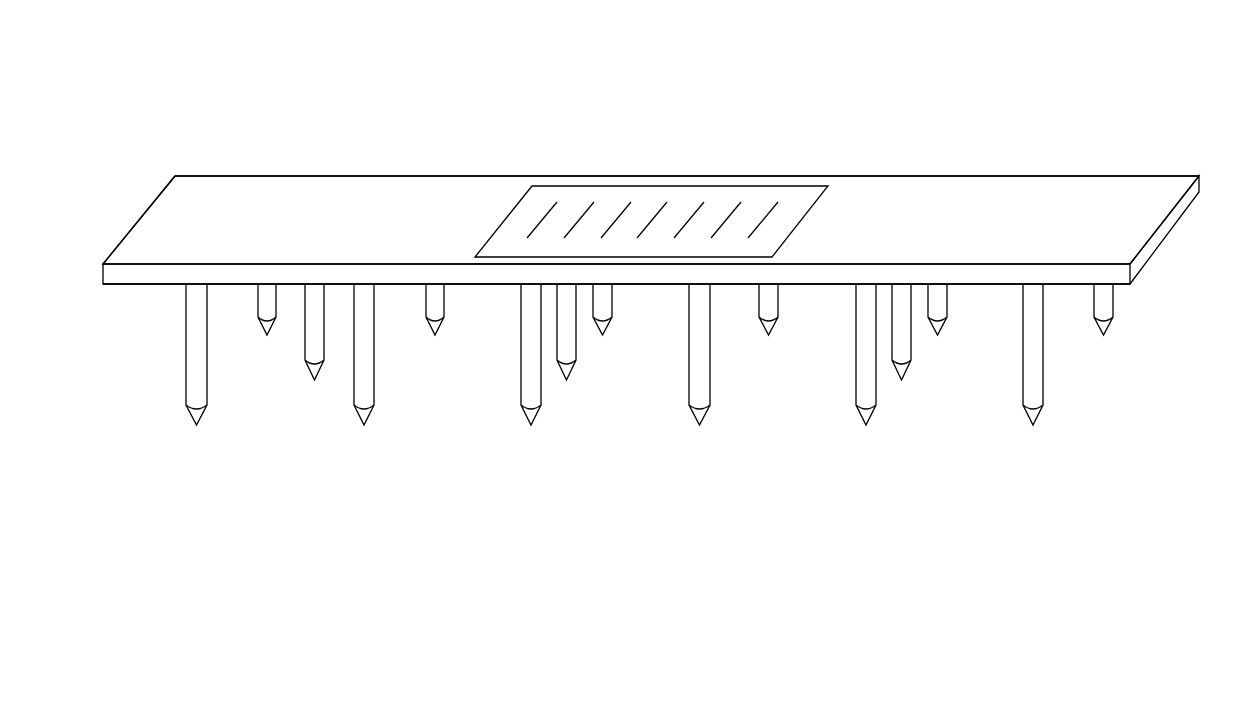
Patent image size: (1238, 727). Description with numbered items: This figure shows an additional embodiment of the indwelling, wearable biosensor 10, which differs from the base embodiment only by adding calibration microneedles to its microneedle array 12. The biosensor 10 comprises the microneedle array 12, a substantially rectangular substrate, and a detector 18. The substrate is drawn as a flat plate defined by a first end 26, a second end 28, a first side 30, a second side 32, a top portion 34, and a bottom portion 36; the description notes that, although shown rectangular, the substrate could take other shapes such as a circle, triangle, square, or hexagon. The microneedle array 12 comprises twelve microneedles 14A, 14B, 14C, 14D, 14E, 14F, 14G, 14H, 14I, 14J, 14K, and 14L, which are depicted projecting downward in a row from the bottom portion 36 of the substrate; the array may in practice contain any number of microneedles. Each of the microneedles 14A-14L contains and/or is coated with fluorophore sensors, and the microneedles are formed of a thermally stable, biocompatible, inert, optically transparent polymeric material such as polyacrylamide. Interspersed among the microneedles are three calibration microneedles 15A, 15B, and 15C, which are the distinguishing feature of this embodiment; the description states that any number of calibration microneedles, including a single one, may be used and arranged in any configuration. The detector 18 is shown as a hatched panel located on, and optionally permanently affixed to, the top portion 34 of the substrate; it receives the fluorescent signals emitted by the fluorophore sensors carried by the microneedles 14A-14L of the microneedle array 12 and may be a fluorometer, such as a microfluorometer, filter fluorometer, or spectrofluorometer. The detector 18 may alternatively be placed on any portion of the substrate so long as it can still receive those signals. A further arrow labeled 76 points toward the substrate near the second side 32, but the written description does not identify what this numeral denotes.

The indwelling, wearable biosensor 10 is at (203, 47).
The microneedle array 12 is at (653, 479).
The microneedle 14A is at (196, 425).
The microneedle 14B is at (267, 335).
The microneedle 14C is at (364, 425).
The microneedle 14D is at (435, 335).
The microneedle 14E is at (531, 425).
The microneedle 14F is at (602, 335).
The microneedle 14G is at (699, 425).
The microneedle 14H is at (768, 335).
The microneedle 14I is at (866, 425).
The microneedle 14J is at (937, 335).
The microneedle 14K is at (1033, 425).
The microneedle 14L is at (1103, 335).
The calibration microneedle 15A is at (314, 380).
The calibration microneedle 15B is at (566, 380).
The calibration microneedle 15C is at (901, 380).
The detector 18 is at (653, 218).
The first end 26 is at (137, 220).
The second end 28 is at (1164, 228).
The first side 30 is at (1115, 275).
The second side 32 is at (837, 175).
The top portion 34 is at (322, 220).
The bottom portion 36 is at (133, 285).
The direction arrow 76 is at (968, 149).